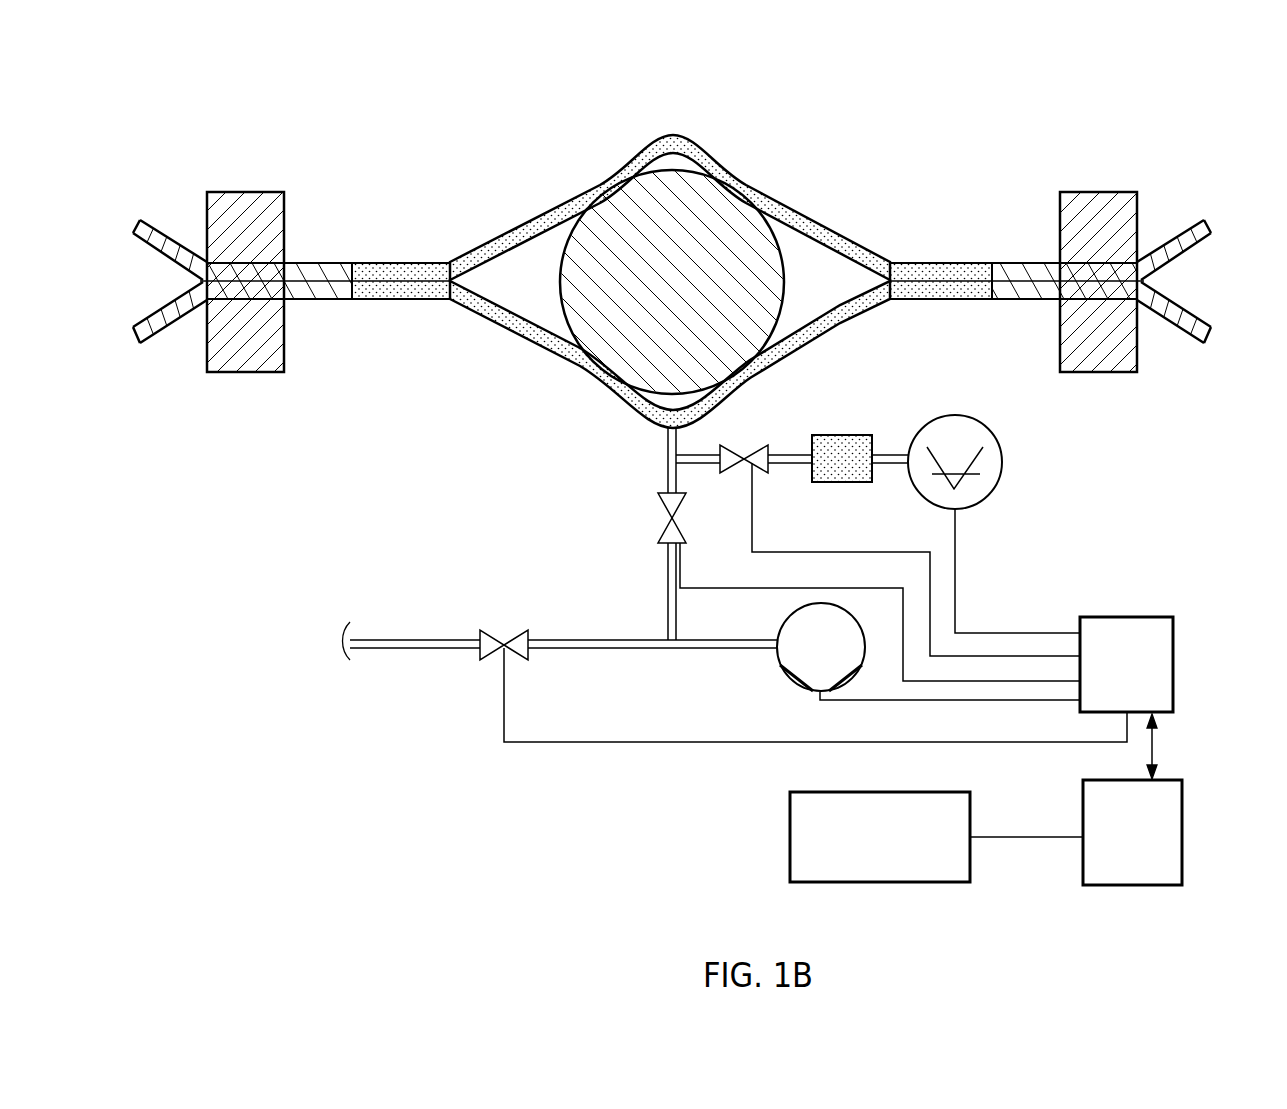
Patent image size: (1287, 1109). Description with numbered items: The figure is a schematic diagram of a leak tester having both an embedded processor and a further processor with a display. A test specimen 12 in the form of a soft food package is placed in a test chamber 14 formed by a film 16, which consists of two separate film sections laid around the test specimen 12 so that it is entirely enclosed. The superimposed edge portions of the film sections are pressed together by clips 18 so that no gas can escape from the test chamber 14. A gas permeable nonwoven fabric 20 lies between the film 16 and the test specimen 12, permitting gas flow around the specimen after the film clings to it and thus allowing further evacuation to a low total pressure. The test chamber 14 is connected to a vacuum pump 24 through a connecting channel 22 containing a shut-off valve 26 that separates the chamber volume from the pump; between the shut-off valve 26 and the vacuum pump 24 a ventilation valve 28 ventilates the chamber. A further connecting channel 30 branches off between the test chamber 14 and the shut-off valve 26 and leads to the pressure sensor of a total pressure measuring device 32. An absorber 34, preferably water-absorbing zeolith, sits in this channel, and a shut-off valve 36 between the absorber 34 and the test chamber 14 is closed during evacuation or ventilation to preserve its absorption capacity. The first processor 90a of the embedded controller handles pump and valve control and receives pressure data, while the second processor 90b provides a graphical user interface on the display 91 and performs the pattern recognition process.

The test specimen 12 is at (598, 217).
The test chamber 14 is at (858, 186).
The film 16 is at (765, 207).
The clips 18 is at (242, 212).
The nonwoven fabric 20 is at (490, 240).
The connecting channel 22 is at (668, 463).
The vacuum pump 24 is at (813, 677).
The shut-off valve 26 is at (670, 533).
The ventilation valve 28 is at (490, 630).
The further connecting channel 30 is at (790, 458).
The total pressure measuring device 32 is at (985, 475).
The absorber 34 is at (850, 465).
The shut-off valve 36 is at (728, 460).
The first processor 90a is at (1145, 617).
The second processor 90b is at (1180, 780).
The display 91 is at (790, 810).